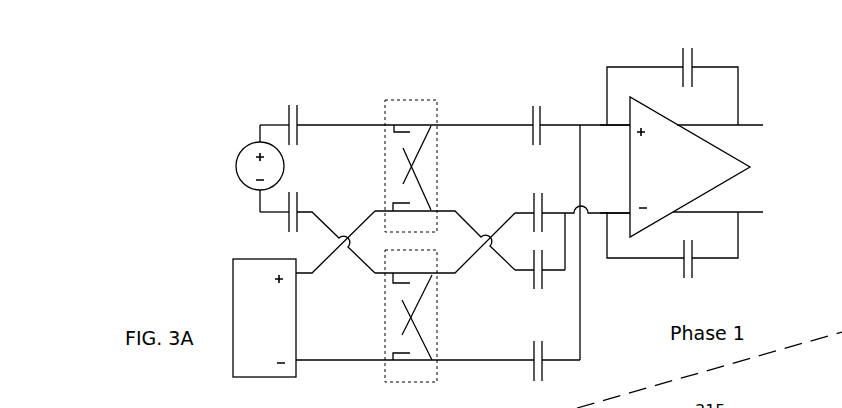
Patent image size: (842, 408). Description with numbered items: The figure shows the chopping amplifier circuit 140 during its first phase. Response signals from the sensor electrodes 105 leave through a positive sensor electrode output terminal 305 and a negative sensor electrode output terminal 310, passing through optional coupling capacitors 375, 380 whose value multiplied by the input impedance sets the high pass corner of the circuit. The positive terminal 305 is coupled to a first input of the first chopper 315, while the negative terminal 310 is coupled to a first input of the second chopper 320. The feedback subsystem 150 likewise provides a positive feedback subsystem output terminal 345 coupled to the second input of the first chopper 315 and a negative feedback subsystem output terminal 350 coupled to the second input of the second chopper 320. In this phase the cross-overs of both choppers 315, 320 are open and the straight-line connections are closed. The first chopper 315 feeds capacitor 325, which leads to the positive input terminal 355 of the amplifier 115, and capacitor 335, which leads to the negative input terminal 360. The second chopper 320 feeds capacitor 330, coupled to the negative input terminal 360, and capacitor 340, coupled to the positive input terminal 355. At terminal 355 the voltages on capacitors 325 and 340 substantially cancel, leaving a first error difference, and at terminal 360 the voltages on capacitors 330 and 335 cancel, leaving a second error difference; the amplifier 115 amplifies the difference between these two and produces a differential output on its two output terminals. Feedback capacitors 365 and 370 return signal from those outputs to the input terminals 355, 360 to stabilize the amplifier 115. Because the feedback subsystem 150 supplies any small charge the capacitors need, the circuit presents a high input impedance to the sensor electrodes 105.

The chopping amplifier circuit 140 is at (143, 77).
The sensor electrodes 105 is at (235, 172).
The amplifier 115 is at (722, 152).
The feedback subsystem 150 is at (233, 308).
The first sensor electrode output terminal 305 is at (260, 126).
The second sensor electrode output terminal 310 is at (260, 212).
The first chopper 315 is at (396, 100).
The second chopper 320 is at (418, 382).
The capacitor 325 is at (533, 108).
The capacitor 330 is at (534, 202).
The capacitor 335 is at (542, 284).
The capacitor 340 is at (534, 352).
The first feedback subsystem output terminal 345 is at (303, 273).
The second feedback subsystem output terminal 350 is at (308, 360).
The first input terminal 355 is at (622, 127).
The second input terminal 360 is at (622, 212).
The feedback capacitor 365 is at (683, 40).
The feedback capacitor 370 is at (693, 278).
The coupling capacitor 375 is at (289, 112).
The coupling capacitor 380 is at (298, 200).